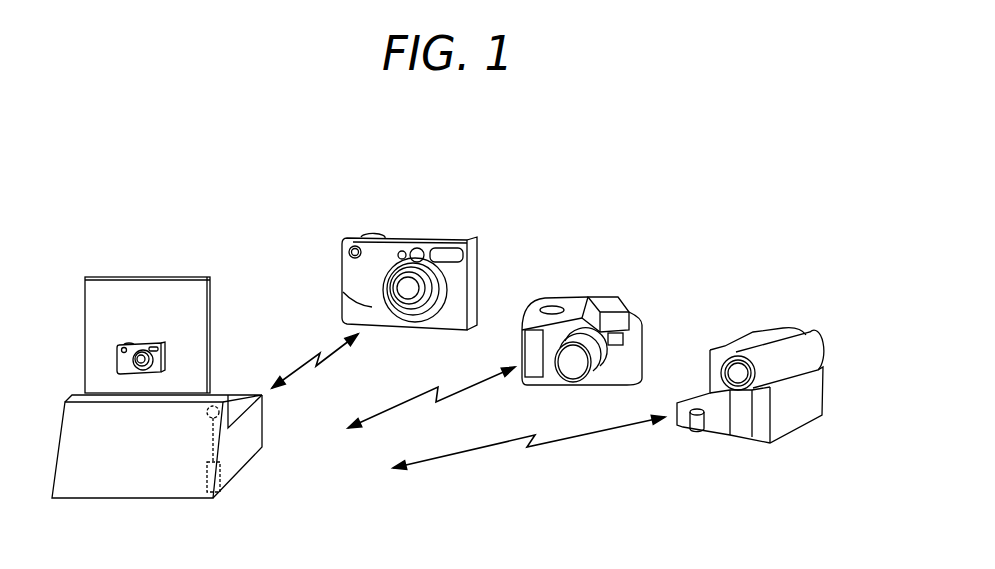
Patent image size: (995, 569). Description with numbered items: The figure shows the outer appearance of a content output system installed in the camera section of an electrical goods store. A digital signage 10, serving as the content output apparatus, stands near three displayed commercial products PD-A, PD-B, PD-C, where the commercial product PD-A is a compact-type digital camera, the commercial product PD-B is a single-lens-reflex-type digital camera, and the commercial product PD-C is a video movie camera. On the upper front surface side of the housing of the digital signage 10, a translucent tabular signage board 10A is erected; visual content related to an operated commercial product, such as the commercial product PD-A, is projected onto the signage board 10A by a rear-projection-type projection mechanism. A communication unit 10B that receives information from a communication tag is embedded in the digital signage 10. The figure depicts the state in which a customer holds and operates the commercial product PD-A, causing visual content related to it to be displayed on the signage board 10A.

The digital signage 10 is at (232, 366).
The signage board 10A is at (203, 342).
The communication unit 10B is at (222, 452).
The commercial product PD-A is at (448, 242).
The commercial product PD-B is at (633, 318).
The commercial product PD-C is at (797, 343).